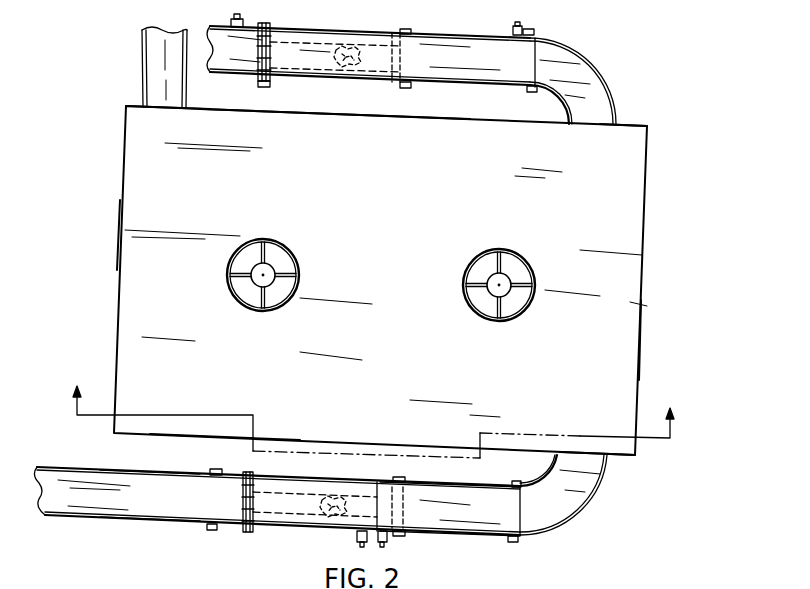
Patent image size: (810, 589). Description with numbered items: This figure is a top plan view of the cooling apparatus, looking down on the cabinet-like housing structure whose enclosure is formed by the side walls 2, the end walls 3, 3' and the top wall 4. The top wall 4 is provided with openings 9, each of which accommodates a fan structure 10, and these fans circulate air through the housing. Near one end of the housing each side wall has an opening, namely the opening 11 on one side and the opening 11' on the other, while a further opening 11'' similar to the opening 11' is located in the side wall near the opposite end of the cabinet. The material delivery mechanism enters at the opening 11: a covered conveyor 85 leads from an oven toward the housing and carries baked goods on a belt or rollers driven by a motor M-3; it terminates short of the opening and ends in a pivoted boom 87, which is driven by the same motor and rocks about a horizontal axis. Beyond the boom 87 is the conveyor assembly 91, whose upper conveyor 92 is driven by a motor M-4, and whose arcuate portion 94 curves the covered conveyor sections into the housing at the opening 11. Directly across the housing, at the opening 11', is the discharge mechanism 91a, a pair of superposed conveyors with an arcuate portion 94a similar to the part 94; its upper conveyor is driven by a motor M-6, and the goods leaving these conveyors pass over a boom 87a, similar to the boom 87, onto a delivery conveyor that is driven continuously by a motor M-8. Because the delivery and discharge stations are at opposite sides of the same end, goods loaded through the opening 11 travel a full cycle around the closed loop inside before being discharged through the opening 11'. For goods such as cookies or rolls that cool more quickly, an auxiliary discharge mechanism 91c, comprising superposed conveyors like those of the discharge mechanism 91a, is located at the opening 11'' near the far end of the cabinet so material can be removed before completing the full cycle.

The side wall 2 is at (341, 113).
The end wall 3 is at (375, 282).
The end wall 3' is at (100, 235).
The top wall 4 is at (638, 347).
The opening 9 is at (288, 255).
The fan structure 10 is at (286, 298).
The opening 11 is at (601, 466).
The opening 11' is at (628, 112).
The opening 11'' is at (175, 95).
The covered conveyor 85 is at (156, 520).
The boom 87 is at (293, 530).
The boom 87a is at (340, 44).
The conveyor assembly 91 is at (485, 480).
The discharge mechanism 91a is at (442, 32).
The auxiliary discharge mechanism 91c is at (136, 85).
The upper conveyor 92 is at (476, 524).
The arcuate portion 94 is at (578, 515).
The arcuate portion 94a is at (594, 62).
The motor M-3 is at (356, 538).
The motor M-4 is at (386, 540).
The motor M-6 is at (534, 33).
The motor M-8 is at (229, 20).